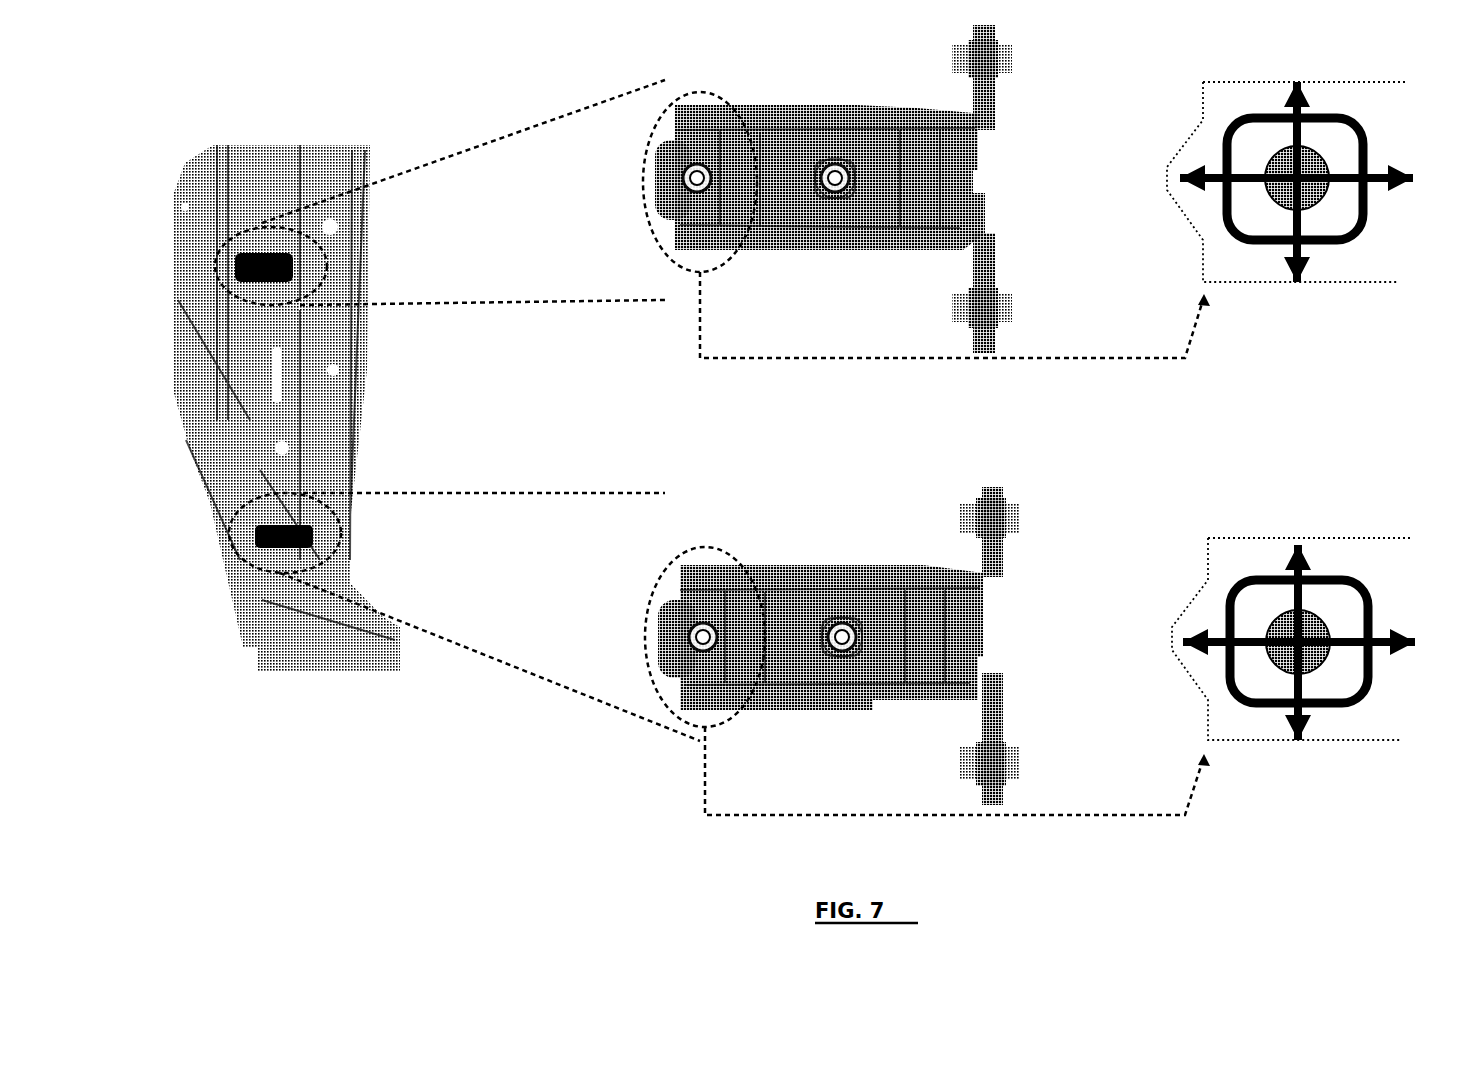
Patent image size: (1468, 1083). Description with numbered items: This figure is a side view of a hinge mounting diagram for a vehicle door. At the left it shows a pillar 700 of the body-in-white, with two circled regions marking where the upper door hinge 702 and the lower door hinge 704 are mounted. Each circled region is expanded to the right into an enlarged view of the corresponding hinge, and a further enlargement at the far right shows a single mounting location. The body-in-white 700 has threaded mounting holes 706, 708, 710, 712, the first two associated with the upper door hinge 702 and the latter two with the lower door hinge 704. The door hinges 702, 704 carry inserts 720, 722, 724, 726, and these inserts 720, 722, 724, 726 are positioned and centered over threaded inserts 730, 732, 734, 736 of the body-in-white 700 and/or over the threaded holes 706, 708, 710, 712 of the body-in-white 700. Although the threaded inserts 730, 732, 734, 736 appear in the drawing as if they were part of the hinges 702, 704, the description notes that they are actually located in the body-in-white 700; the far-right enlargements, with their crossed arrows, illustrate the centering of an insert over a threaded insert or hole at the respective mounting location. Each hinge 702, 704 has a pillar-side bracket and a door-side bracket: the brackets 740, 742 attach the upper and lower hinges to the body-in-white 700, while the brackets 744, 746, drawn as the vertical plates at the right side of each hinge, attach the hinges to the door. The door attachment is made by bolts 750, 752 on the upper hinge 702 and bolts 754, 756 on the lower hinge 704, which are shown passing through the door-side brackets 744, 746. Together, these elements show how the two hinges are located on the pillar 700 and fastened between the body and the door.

The pillar 700 is at (296, 163).
The upper door hinge 702 is at (255, 280).
The lower door hinge 704 is at (265, 545).
The threaded mounting hole 706 is at (683, 177).
The threaded mounting hole 708 is at (832, 193).
The threaded mounting hole 710 is at (693, 630).
The threaded mounting hole 712 is at (852, 647).
The insert 720 is at (693, 200).
The insert 722 is at (830, 207).
The insert 724 is at (695, 660).
The insert 726 is at (840, 663).
The threaded insert 730 is at (677, 184).
The threaded insert 732 is at (820, 197).
The threaded insert 734 is at (687, 643).
The threaded insert 736 is at (827, 652).
The bracket 740 is at (807, 150).
The bracket 742 is at (820, 607).
The bracket 744 is at (985, 102).
The bracket 746 is at (997, 698).
The bolt 750 is at (1002, 56).
The bolt 752 is at (1008, 310).
The bolt 754 is at (1012, 522).
The bolt 756 is at (1017, 760).